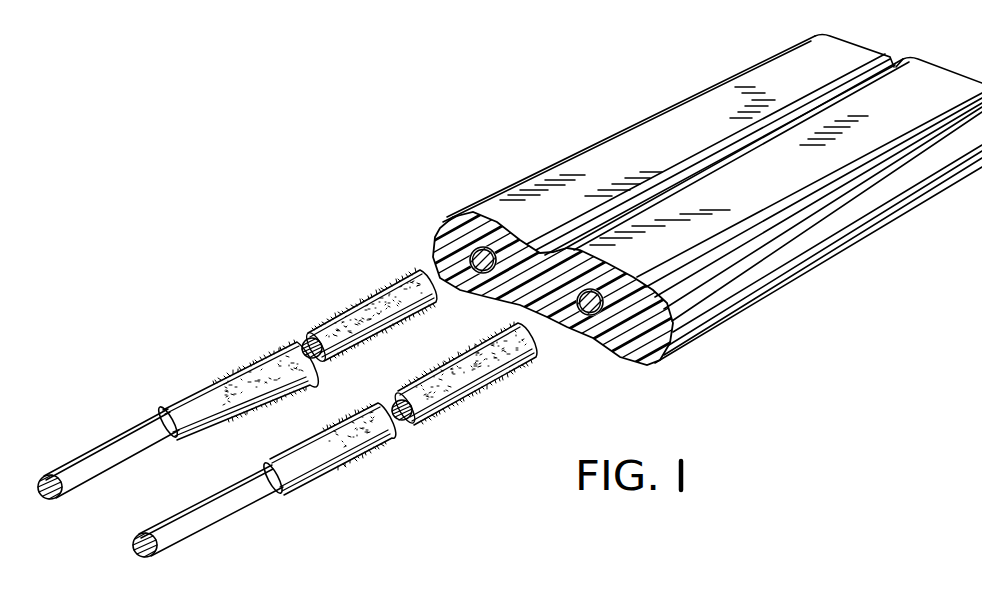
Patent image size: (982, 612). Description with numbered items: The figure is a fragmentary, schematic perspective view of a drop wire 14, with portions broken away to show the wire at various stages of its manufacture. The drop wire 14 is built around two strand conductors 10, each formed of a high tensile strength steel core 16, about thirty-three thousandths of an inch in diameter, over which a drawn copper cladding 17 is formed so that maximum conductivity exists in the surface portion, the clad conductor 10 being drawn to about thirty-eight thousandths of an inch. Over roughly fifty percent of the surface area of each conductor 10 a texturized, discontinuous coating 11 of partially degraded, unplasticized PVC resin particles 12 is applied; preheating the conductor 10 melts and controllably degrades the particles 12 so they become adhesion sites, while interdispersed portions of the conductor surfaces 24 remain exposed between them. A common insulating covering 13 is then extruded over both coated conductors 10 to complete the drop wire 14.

The strand conductor 10 is at (134, 427).
The texturized, discontinuous coating 11 is at (364, 370).
The PVC resin particle 12 is at (364, 300).
The common insulating covering 13 is at (442, 222).
The drop wire 14 is at (588, 143).
The steel core 16 is at (62, 467).
The copper cladding 17 is at (281, 494).
The exposed surface of the conductor 24 is at (391, 286).